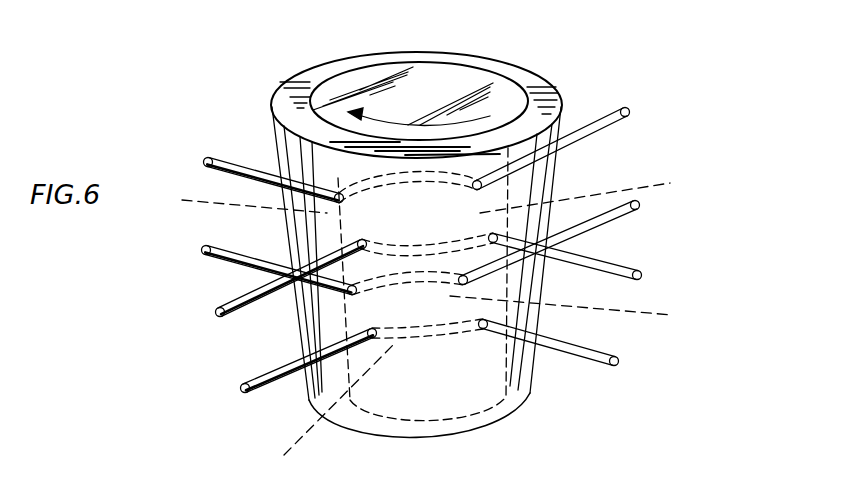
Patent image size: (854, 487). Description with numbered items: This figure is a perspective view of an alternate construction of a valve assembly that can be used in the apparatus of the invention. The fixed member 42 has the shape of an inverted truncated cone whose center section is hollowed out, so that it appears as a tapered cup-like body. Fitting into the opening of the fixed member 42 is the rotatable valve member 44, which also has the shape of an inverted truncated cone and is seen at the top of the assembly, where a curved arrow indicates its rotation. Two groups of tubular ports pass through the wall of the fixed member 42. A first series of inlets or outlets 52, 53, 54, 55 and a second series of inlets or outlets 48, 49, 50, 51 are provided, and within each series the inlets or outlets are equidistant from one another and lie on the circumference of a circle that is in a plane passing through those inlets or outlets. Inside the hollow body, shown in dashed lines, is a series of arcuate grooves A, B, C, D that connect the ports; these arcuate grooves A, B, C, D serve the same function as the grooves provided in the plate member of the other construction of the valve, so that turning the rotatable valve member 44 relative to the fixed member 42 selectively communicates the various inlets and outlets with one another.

The fixed member 42 is at (553, 87).
The rotatable valve member 44 is at (460, 85).
The inlet or outlet 48 is at (623, 265).
The inlet or outlet 49 is at (615, 113).
The inlet or outlet 50 is at (242, 167).
The inlet or outlet 51 is at (247, 308).
The inlet or outlet 52 is at (592, 360).
The inlet or outlet 53 is at (607, 217).
The inlet or outlet 54 is at (217, 258).
The inlet or outlet 55 is at (267, 390).
The arcuate groove A is at (587, 194).
The arcuate groove B is at (328, 408).
The arcuate groove C is at (573, 311).
The arcuate groove D is at (243, 200).